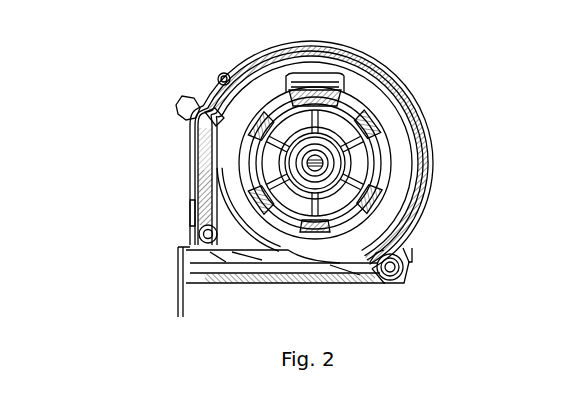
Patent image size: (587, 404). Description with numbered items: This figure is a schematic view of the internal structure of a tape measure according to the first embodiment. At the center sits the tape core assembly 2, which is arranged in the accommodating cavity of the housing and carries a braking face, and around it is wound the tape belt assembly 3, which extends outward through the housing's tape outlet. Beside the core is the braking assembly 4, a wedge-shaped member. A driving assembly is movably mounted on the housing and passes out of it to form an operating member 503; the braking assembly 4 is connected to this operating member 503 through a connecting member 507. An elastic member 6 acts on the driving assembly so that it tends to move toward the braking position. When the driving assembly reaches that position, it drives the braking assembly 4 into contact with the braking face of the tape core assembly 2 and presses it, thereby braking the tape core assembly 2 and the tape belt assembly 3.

The tape core assembly 2 is at (402, 128).
The tape belt assembly 3 is at (180, 293).
The braking assembly 4 is at (190, 143).
The elastic member 6 is at (194, 212).
The operating member 503 is at (178, 112).
The connecting member 507 is at (217, 120).